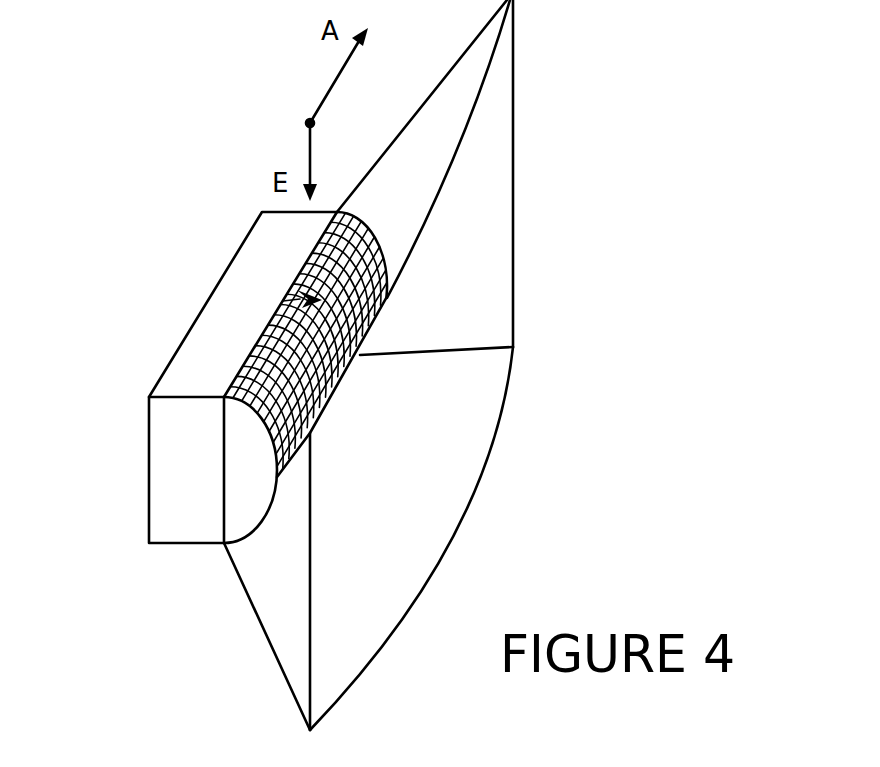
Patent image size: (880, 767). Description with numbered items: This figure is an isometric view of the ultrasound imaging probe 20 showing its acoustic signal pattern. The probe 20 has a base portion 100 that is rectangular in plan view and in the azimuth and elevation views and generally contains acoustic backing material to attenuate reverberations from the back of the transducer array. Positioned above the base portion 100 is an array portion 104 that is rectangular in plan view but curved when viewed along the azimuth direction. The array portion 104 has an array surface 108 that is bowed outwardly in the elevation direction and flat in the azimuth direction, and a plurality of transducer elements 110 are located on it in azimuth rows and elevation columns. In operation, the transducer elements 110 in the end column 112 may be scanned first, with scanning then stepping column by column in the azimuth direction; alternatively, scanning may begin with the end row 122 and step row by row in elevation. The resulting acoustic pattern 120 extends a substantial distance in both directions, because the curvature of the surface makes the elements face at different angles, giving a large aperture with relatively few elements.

The ultrasound imaging probe 20 is at (210, 193).
The base portion 100 is at (202, 497).
The array portion 104 is at (267, 491).
The array surface 108 is at (267, 424).
The transducer elements 110 is at (293, 288).
The end column 112 is at (380, 242).
The acoustic pattern 120 is at (457, 175).
The end row 122 is at (278, 307).